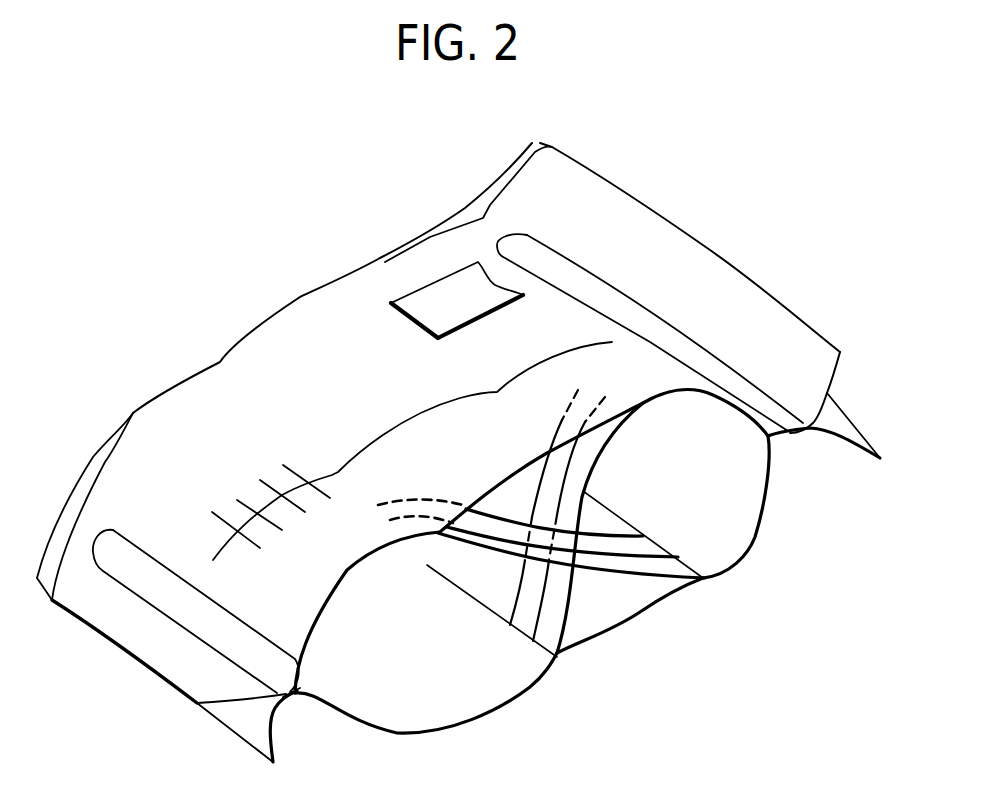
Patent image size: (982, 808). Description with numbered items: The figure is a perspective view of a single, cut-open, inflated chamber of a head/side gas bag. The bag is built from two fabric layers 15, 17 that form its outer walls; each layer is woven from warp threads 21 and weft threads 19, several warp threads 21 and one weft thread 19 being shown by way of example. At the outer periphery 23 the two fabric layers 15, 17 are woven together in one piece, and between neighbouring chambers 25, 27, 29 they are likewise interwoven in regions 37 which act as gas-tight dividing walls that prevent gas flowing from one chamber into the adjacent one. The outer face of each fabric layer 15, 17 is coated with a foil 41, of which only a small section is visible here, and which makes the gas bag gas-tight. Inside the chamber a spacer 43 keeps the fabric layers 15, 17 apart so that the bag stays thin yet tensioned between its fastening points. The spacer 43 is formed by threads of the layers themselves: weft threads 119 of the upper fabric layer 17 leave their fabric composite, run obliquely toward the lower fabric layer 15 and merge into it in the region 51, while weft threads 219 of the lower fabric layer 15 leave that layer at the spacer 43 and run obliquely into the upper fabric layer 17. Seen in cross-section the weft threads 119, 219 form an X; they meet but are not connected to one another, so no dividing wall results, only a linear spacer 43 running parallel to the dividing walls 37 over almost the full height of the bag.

The fabric layer 15 is at (488, 713).
The fabric layer 17 is at (338, 580).
The weft thread 19 is at (365, 443).
The warp threads 21 is at (238, 498).
The outer periphery 23 is at (93, 457).
The chamber 25 is at (235, 713).
The chamber 27 is at (510, 670).
The chamber 29 is at (833, 417).
The regions representing dividing walls 37 is at (293, 697).
The foil 41 is at (433, 293).
The spacer 43 is at (636, 583).
The region 51 is at (709, 583).
The weft threads 119 is at (487, 548).
The weft threads 219 is at (572, 616).